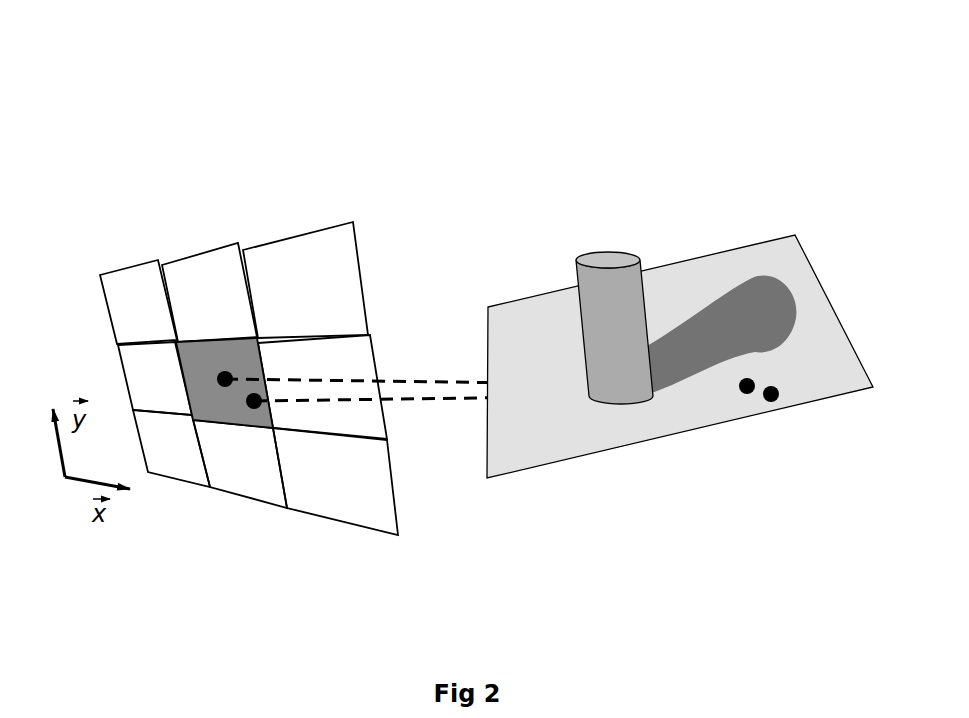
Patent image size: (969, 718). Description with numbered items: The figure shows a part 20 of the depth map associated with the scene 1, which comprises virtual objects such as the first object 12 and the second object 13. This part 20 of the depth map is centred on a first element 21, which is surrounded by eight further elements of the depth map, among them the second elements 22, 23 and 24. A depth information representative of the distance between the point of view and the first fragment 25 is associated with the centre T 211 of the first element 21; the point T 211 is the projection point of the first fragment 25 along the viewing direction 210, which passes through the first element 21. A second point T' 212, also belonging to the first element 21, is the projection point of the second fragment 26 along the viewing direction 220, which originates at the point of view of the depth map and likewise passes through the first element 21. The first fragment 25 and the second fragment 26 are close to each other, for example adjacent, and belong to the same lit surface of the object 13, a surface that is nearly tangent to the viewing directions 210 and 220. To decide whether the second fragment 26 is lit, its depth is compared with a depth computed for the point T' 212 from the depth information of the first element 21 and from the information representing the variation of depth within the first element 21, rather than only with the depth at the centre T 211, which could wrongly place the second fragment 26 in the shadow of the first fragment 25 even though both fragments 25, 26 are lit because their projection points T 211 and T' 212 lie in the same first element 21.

The scene 1 is at (680, 276).
The first object 12 is at (603, 260).
The second object 13 is at (712, 255).
The part of the depth map 20 is at (260, 359).
The first element 21 is at (191, 347).
The second element 22 is at (352, 355).
The second element 23 is at (262, 487).
The second element 24 is at (360, 505).
The centre T of the first element 211 is at (228, 372).
The point T' 212 is at (250, 409).
The viewing direction 210 is at (455, 378).
The viewing direction 220 is at (442, 400).
The fragment P_T 25 is at (745, 395).
The fragment P_T' 26 is at (773, 402).